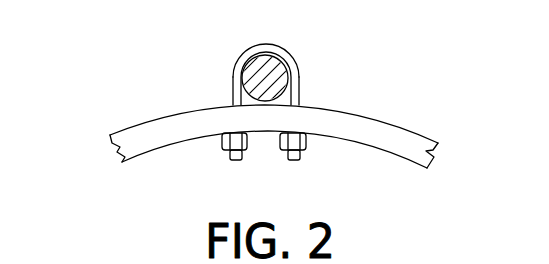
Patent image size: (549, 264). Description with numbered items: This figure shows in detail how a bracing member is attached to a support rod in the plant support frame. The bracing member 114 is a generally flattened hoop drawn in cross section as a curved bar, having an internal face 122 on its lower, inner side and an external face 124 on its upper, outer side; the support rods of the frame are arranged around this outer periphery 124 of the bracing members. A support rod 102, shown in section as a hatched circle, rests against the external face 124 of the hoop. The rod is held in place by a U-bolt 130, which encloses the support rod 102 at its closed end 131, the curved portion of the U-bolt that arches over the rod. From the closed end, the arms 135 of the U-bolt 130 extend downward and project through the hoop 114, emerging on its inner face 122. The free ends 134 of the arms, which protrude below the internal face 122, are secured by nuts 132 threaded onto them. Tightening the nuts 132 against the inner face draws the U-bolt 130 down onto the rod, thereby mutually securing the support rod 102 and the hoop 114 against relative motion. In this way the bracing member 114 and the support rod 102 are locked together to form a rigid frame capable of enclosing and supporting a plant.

The support rod 102 is at (274, 74).
The bracing member 114 is at (395, 133).
The internal face 122 is at (147, 153).
The external face 124 is at (130, 130).
The U-bolt 130 is at (300, 80).
The closed end 131 is at (247, 52).
The nut 132 is at (306, 138).
The free end 134 is at (293, 160).
The arm 135 is at (233, 86).